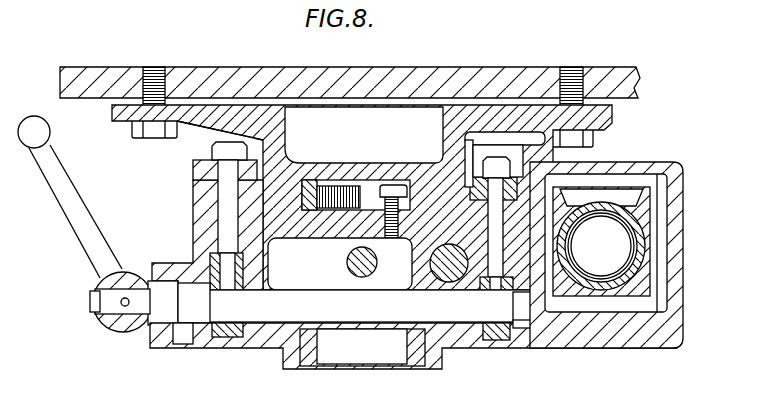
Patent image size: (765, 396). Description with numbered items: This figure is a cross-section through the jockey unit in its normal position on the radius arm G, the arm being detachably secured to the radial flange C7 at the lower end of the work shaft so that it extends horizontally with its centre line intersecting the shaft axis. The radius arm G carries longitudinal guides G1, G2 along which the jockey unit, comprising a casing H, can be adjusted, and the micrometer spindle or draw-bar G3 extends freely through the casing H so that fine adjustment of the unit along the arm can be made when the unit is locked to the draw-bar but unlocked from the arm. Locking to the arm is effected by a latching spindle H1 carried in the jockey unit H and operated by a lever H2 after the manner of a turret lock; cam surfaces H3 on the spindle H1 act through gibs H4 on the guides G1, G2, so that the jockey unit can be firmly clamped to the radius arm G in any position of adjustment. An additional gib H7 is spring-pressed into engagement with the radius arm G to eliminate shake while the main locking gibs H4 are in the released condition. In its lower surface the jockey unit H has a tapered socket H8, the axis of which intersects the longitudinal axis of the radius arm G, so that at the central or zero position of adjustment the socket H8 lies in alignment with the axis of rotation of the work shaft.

The radial flange C7 is at (132, 80).
The radius arm G is at (402, 173).
The longitudinal guide G1 is at (472, 143).
The longitudinal guide G2 is at (253, 133).
The micrometer spindle or draw-bar G3 is at (350, 264).
The jockey unit casing H is at (208, 218).
The latching spindle H1 is at (222, 313).
The lever H2 is at (82, 229).
The cam surface H3 is at (203, 296).
The gib H4 is at (195, 168).
The additional gib H7 is at (310, 186).
The tapered socket H8 is at (407, 356).